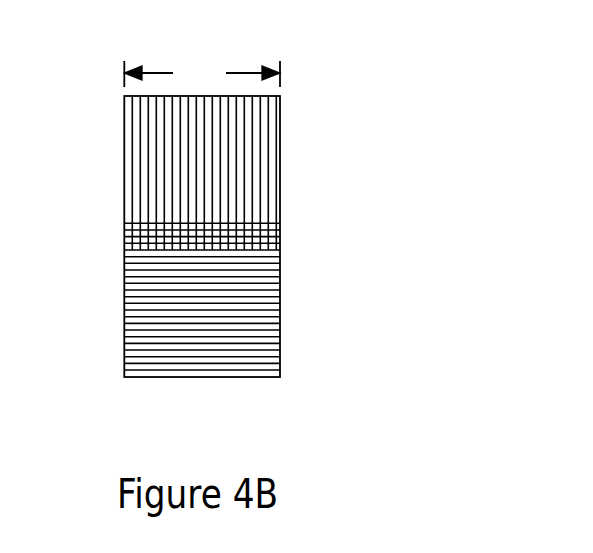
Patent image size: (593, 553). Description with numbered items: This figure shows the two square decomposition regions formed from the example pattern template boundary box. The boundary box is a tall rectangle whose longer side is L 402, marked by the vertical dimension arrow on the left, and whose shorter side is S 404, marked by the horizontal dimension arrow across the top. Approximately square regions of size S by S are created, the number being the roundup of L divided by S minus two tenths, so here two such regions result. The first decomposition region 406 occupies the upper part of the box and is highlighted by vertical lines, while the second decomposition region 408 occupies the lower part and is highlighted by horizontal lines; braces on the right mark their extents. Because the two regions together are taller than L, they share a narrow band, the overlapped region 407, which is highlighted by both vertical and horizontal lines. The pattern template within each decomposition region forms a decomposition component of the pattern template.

The longer side L 402 is at (117, 96).
The shorter side S 404 is at (202, 49).
The decomposition region 1 406 is at (284, 99).
The overlapped region 407 is at (160, 241).
The decomposition region 2 408 is at (284, 376).